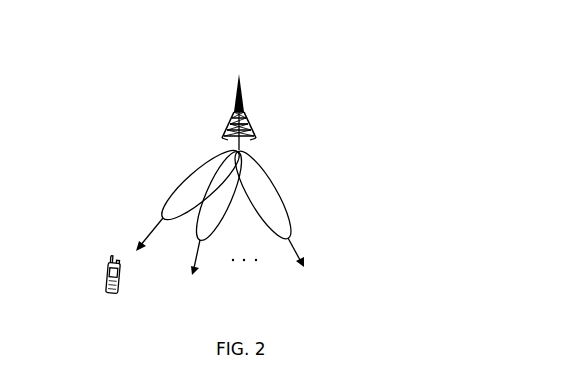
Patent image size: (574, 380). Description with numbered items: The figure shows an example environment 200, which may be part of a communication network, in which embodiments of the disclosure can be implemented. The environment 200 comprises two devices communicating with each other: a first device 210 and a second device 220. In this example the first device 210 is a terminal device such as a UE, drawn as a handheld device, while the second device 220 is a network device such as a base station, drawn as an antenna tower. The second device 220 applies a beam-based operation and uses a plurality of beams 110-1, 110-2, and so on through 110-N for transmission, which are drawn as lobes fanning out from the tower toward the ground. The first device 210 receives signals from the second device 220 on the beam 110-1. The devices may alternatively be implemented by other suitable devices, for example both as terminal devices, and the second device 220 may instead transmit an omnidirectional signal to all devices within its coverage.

The environment 200 is at (219, 79).
The second device 220 is at (244, 92).
The beam 110-1 is at (177, 196).
The beam 110-2 is at (202, 211).
The beam 110-N is at (284, 206).
The first device 210 is at (104, 261).